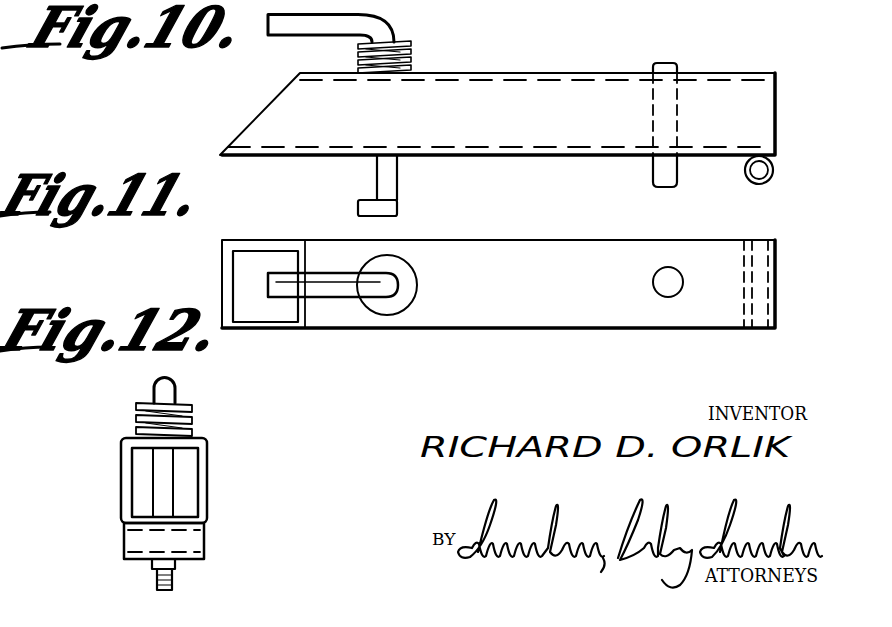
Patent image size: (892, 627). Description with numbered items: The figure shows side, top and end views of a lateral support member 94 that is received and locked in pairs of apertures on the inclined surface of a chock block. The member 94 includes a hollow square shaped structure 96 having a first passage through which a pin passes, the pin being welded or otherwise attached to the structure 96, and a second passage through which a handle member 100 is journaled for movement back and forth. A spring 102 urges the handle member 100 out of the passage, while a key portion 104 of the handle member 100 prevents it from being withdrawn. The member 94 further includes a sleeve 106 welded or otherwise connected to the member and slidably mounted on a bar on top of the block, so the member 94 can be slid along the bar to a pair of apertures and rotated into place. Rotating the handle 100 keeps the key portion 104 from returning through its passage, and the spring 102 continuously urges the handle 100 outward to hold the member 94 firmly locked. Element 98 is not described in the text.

In FIG. 10, the lateral support member 94 is at (571, 20).
In FIG. 12, the lateral support member 94 is at (215, 472).
In FIG. 10, the hollow square shaped structure 96 is at (241, 159).
In FIG. 11, the hollow square shaped structure 96 is at (338, 318).
In FIG. 12, the hollow square shaped structure 96 is at (207, 519).
In FIG. 10, the guide pin 98 is at (680, 63).
In FIG. 11, the guide pin 98 is at (672, 278).
In FIG. 10, the handle member 100 is at (394, 27).
In FIG. 11, the handle member 100 is at (325, 282).
In FIG. 12, the handle member 100 is at (177, 396).
In FIG. 10, the spring 102 is at (398, 65).
In FIG. 12, the spring 102 is at (192, 423).
In FIG. 10, the key portion 104 is at (396, 210).
In FIG. 12, the key portion 104 is at (172, 581).
In FIG. 10, the sleeve 106 is at (757, 175).